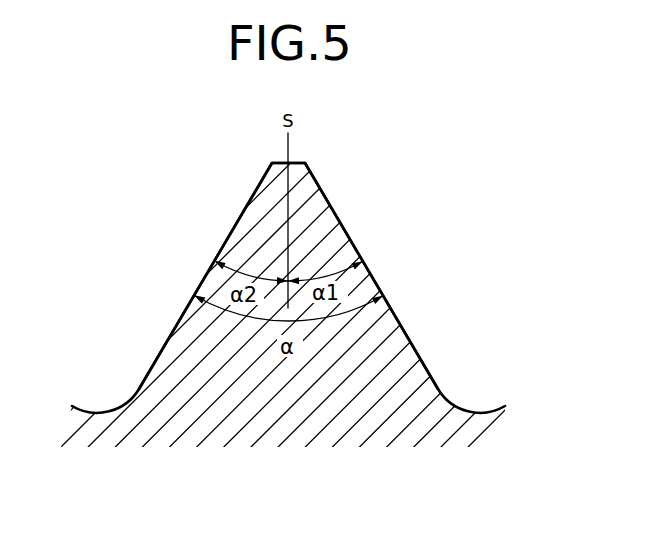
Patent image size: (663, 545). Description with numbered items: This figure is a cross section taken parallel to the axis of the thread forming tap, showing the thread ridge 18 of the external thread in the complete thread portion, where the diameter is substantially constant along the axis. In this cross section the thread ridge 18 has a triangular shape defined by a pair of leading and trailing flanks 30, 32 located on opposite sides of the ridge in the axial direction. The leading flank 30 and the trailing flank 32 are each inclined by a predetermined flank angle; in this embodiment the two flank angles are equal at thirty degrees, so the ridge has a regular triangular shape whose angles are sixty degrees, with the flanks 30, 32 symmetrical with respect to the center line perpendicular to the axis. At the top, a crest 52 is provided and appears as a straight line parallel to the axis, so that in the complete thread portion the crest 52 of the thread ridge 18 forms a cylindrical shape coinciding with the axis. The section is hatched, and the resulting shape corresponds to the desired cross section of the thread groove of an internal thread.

The thread ridge 18 is at (372, 163).
The crest 52 is at (285, 162).
The trailing flank 32 is at (203, 281).
The leading flank 30 is at (371, 273).